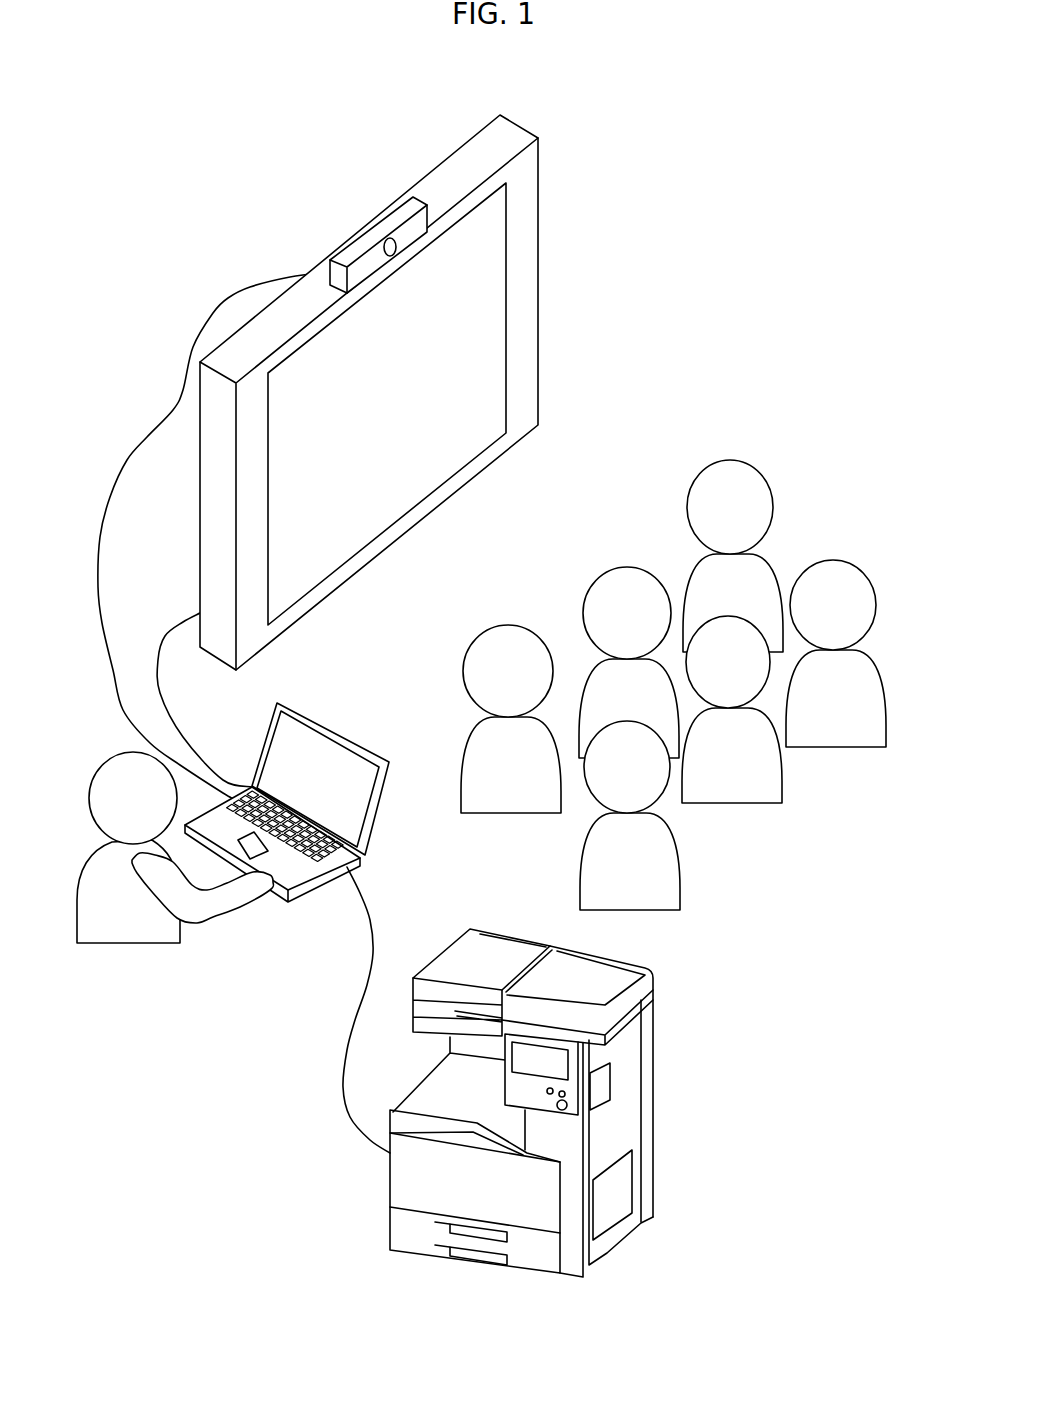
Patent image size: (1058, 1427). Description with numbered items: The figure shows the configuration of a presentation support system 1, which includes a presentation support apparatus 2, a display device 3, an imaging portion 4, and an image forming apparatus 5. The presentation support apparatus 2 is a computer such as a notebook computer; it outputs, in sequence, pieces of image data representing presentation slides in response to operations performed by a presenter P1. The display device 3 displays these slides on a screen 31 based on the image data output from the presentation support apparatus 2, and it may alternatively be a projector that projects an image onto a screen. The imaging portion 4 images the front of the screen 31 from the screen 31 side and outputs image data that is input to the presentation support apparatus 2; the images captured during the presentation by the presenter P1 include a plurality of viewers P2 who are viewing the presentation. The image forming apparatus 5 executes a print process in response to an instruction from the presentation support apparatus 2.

The presentation support system 1 is at (214, 211).
The presentation support apparatus 2 is at (333, 730).
The display device 3 is at (457, 177).
The screen 31 is at (485, 319).
The imaging portion 4 is at (377, 233).
The image forming apparatus 5 is at (650, 1068).
The presenter P1 is at (115, 768).
The viewers P2 is at (747, 472).